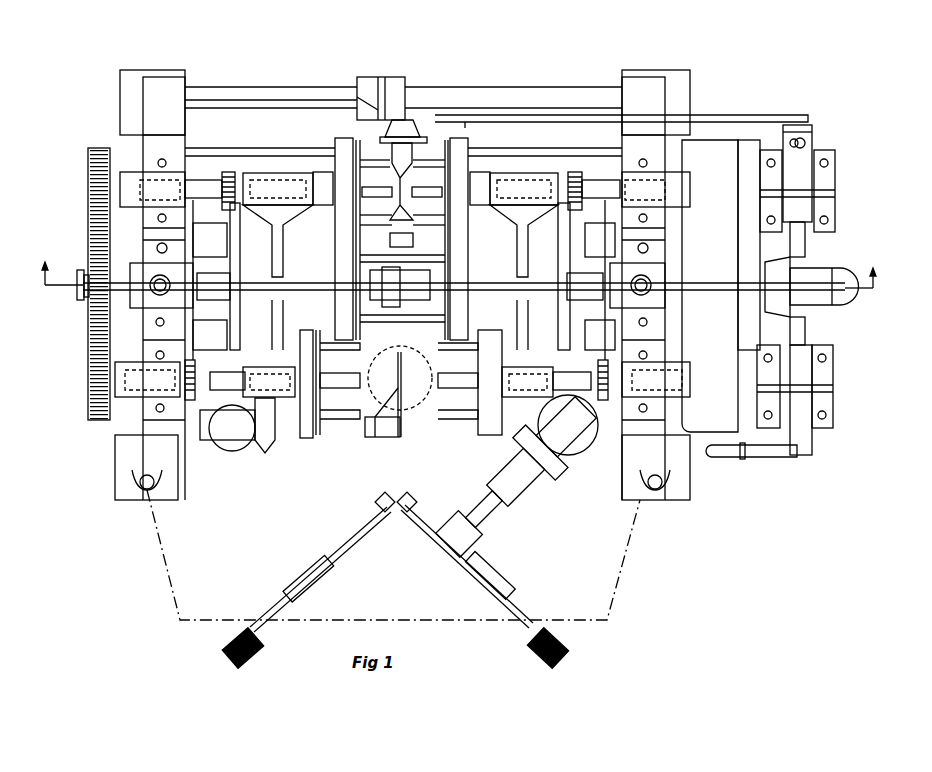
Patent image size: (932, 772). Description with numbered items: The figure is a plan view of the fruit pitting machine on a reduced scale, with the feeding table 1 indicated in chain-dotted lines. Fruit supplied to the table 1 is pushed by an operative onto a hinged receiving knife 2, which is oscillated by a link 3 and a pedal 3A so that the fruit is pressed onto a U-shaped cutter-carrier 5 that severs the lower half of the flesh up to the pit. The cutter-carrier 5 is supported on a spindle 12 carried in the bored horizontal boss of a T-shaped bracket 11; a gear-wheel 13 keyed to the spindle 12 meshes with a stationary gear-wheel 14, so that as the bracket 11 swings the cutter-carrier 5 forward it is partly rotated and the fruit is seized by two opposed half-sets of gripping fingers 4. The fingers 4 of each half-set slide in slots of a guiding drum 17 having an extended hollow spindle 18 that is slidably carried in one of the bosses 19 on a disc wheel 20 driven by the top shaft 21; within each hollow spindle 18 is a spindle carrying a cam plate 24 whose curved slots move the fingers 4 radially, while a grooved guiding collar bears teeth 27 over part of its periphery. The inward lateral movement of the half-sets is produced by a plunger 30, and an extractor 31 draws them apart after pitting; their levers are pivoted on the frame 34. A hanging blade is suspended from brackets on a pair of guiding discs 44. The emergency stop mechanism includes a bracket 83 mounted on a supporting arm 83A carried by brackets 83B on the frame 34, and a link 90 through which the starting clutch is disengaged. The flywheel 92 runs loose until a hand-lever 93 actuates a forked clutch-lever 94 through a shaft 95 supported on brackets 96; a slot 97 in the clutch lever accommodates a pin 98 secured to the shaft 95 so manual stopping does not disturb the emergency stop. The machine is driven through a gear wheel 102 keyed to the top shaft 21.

The table 1 is at (610, 545).
The hinged receiving knife 2 is at (300, 580).
The link 3 is at (322, 572).
The pedal 3A is at (250, 655).
The gripping fingers 4 is at (455, 420).
The U-shaped cutter-carrier 5 is at (404, 400).
The T-shaped bracket 11 is at (225, 432).
The spindle 12 is at (375, 437).
The gear-wheel 13 is at (266, 445).
The stationary gear-wheel 14 is at (240, 445).
The guiding drum 17 is at (462, 190).
The extended hollow spindle 18 is at (322, 190).
The bosses 19 is at (282, 178).
The disc wheel 20 is at (283, 258).
The top shaft 21 is at (75, 290).
The cam plate 24 is at (320, 430).
The teeth 27 is at (230, 175).
The plunger 30 is at (90, 415).
The extractor 31 is at (208, 190).
The frame 34 is at (125, 495).
The guiding discs 44 is at (234, 222).
The bracket 83 is at (364, 85).
The supporting arm 83A is at (452, 95).
The brackets 83B is at (168, 88).
The link 90 is at (708, 116).
The flywheel 92 is at (712, 155).
The hand-lever 93 is at (755, 458).
The forked clutch-lever 94 is at (800, 318).
The shaft 95 is at (800, 248).
The brackets 96 is at (824, 185).
The slot 97 is at (800, 142).
The pin 98 is at (806, 142).
The gear wheel 102 is at (90, 200).